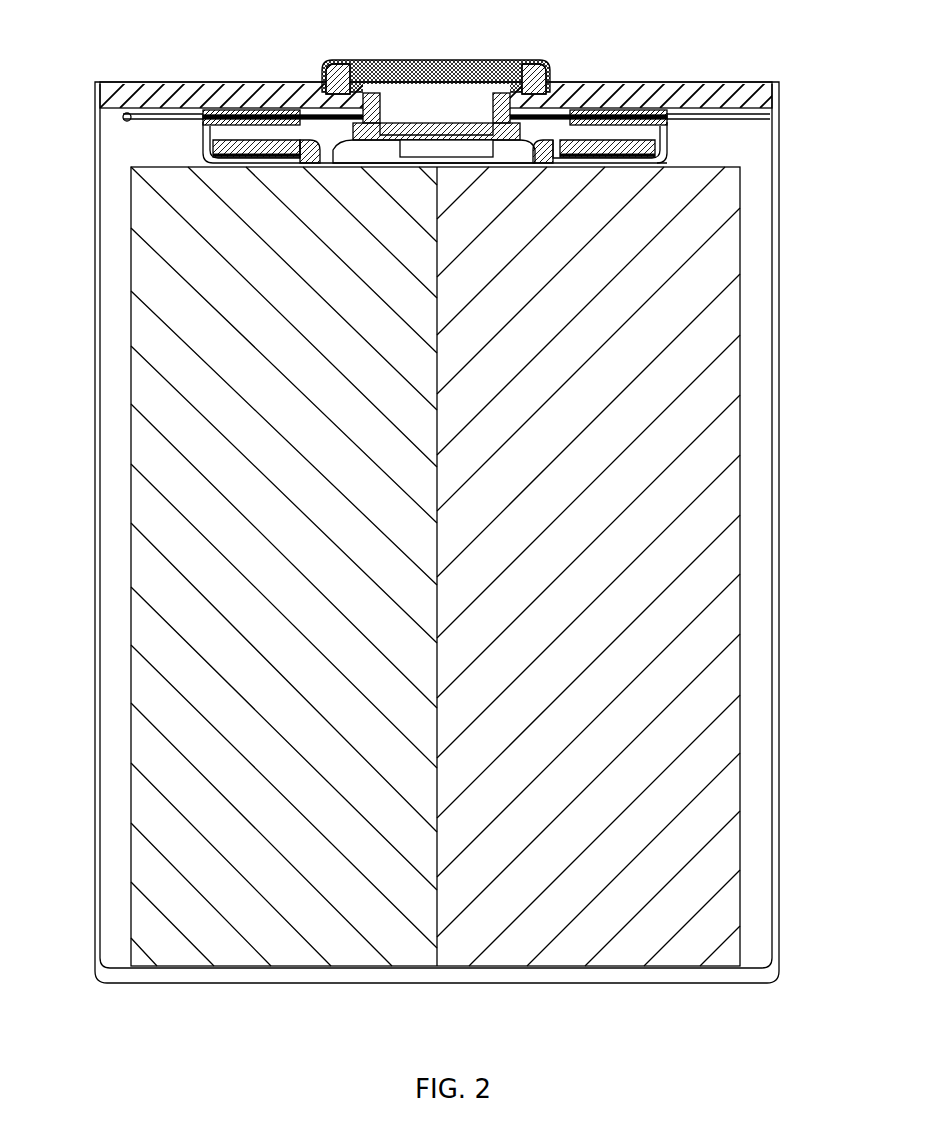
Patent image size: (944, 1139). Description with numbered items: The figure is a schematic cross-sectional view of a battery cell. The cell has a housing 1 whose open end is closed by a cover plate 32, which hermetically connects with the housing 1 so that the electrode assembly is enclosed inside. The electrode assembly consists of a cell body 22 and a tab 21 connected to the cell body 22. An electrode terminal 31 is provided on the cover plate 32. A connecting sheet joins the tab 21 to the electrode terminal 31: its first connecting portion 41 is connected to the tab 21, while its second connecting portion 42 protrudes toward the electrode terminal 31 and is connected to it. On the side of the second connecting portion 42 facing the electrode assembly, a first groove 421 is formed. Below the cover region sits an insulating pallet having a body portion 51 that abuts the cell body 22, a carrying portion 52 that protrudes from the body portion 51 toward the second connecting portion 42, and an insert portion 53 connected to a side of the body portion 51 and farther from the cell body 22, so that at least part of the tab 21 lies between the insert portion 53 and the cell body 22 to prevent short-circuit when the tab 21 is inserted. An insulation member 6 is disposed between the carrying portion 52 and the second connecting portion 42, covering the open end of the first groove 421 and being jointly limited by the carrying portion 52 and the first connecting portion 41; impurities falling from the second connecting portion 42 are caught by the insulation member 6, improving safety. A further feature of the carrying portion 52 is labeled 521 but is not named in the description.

The housing 1 is at (779, 528).
The tab 21 is at (198, 130).
The cell body 22 is at (725, 437).
The electrode terminal 31 is at (467, 130).
The cover plate 32 is at (646, 82).
The first connecting portion 41 is at (222, 117).
The second connecting portion 42 is at (400, 75).
The first groove 421 is at (417, 105).
The body portion 51 is at (333, 160).
The carrying portion 52 is at (440, 140).
The flange of rivet 521 is at (457, 160).
The insert portion 53 is at (263, 158).
The insulation member 6 is at (528, 80).